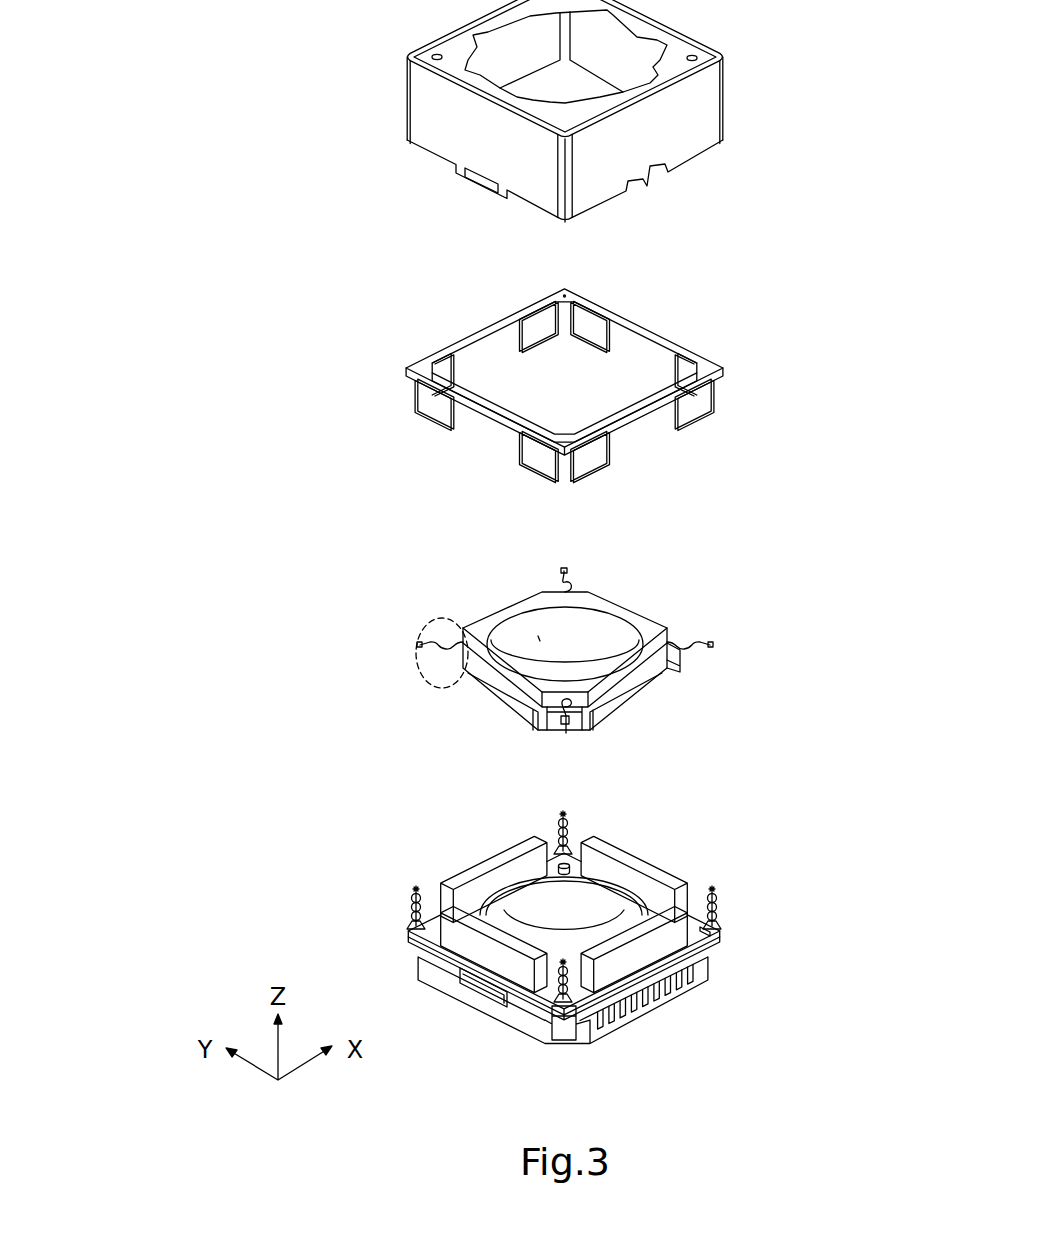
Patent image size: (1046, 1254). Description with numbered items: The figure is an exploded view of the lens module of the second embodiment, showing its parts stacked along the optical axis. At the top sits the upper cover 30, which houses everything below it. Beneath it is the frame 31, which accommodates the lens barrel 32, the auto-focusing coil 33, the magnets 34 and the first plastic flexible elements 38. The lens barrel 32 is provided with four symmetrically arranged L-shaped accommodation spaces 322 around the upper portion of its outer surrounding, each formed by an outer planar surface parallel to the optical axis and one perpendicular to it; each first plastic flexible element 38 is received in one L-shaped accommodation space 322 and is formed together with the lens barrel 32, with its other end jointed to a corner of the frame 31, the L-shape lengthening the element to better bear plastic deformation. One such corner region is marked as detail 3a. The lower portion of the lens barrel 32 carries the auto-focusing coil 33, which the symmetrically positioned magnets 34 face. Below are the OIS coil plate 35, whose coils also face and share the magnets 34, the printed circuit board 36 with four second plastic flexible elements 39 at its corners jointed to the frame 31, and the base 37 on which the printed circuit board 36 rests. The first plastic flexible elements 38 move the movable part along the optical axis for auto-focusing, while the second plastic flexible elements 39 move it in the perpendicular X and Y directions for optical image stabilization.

The upper cover 30 is at (712, 103).
The frame 31 is at (640, 337).
The lens barrel 32 is at (645, 626).
The auto-focusing coil 33 is at (626, 700).
The set of magnets 34 is at (646, 862).
The OIS coil plate 35 is at (690, 918).
The printed circuit board 36 is at (708, 933).
The base 37 is at (530, 1026).
The first plastic flexible element 38 is at (690, 655).
The second plastic flexible element 39 is at (715, 912).
The L-shaped accommodation space 322 is at (674, 656).
The detail region 3a is at (417, 630).